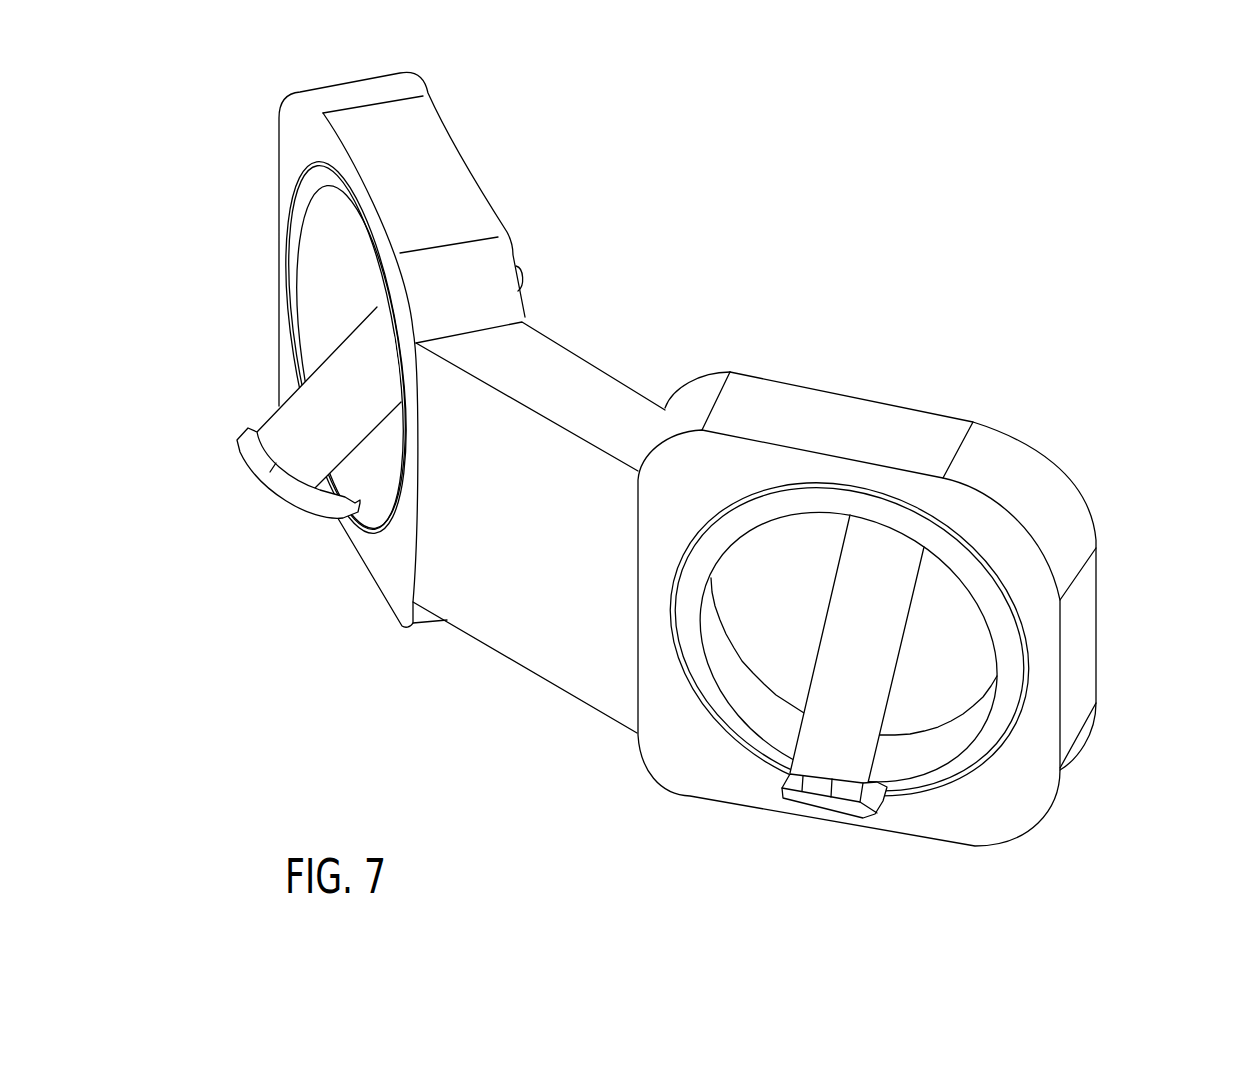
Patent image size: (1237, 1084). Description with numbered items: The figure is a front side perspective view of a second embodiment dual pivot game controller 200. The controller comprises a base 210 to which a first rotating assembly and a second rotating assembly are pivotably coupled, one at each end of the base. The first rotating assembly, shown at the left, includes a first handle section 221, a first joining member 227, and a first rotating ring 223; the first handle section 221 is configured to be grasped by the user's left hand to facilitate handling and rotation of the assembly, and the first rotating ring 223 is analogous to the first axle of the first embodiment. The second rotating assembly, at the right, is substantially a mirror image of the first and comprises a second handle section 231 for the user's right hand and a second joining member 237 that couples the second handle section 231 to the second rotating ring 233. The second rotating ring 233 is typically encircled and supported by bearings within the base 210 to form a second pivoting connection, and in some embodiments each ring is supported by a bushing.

The dual pivot game controller 200 is at (733, 210).
The base 210 is at (787, 380).
The first handle section 221 is at (287, 400).
The first rotating ring 223 is at (320, 190).
The first joining member 227 is at (253, 473).
The second handle section 231 is at (892, 685).
The second rotating ring 233 is at (992, 718).
The second joining member 237 is at (860, 817).